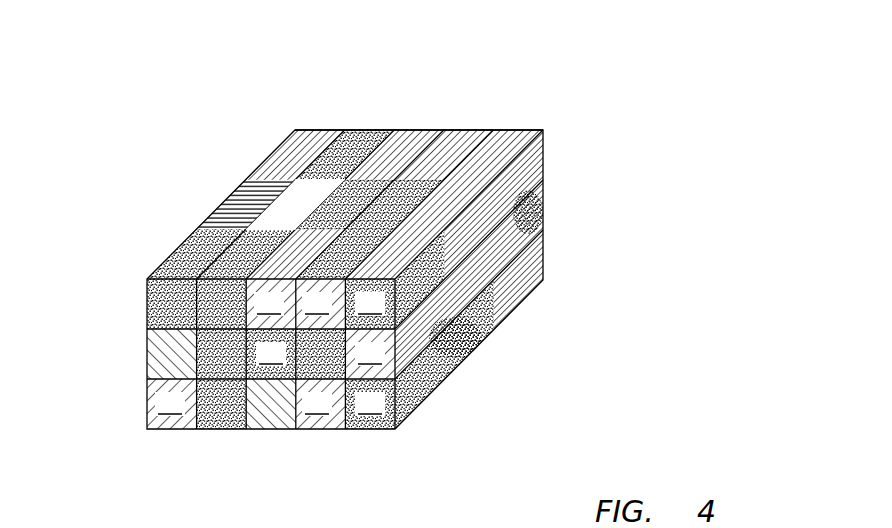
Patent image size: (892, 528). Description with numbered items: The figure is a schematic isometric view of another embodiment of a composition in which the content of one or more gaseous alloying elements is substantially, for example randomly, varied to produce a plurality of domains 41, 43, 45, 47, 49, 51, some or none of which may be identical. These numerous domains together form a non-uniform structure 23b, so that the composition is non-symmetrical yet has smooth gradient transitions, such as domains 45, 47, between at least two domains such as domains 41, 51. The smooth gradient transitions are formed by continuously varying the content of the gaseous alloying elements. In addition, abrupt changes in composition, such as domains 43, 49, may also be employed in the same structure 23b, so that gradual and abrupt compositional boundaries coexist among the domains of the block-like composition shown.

The non-uniform structure 23b is at (143, 152).
The domain 41 is at (226, 415).
The domain 43 is at (163, 268).
The domain 45 is at (329, 375).
The domain 47 is at (270, 417).
The domain 49 is at (540, 146).
The domain 51 is at (292, 135).